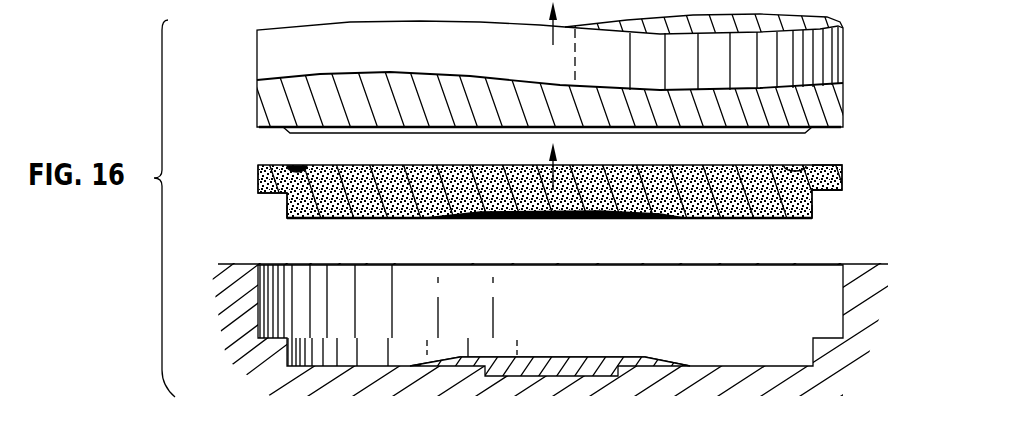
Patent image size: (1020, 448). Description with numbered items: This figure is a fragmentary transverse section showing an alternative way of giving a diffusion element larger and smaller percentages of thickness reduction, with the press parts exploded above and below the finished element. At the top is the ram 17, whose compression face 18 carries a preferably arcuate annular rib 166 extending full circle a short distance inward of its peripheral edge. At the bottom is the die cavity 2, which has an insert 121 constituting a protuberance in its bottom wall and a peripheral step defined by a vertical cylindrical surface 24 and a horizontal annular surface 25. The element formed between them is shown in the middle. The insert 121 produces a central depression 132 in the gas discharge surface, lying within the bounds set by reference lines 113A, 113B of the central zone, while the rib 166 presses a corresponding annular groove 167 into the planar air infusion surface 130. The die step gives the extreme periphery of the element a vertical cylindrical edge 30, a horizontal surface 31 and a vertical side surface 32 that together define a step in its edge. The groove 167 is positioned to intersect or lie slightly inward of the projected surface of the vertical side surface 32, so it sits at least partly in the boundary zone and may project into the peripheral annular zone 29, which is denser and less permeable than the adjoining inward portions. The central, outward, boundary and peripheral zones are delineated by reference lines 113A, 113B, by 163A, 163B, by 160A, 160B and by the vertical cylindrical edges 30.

The die cavity 2 is at (536, 339).
The ram 17 is at (803, 62).
The compression face 18 is at (836, 126).
The annular rib 166 is at (294, 134).
The peripheral annular zone 29 is at (565, 196).
The vertical cylindrical edge 30 is at (846, 178).
The horizontal surface 31 is at (270, 197).
The vertical side surface 32 is at (816, 198).
The air infusion surface 130 is at (594, 165).
The central depression 132 is at (582, 226).
The annular groove 167 is at (304, 166).
The reference line 160A is at (276, 206).
The reference line 160B is at (797, 222).
The reference line 163A is at (340, 222).
The reference line 163B is at (787, 219).
The reference line 113A is at (394, 222).
The reference line 113B is at (733, 220).
The insert 121 is at (537, 369).
The vertical cylindrical surface 24 is at (291, 358).
The horizontal annular surface 25 is at (282, 346).